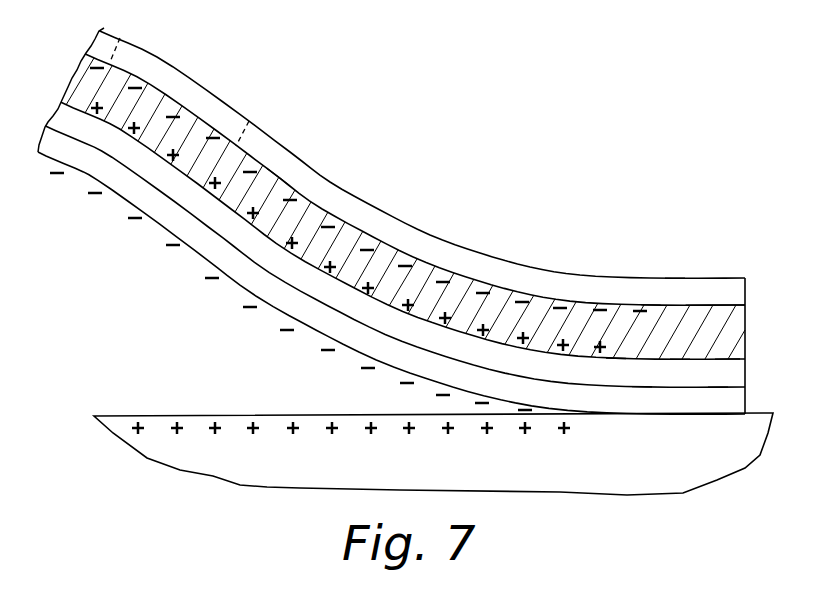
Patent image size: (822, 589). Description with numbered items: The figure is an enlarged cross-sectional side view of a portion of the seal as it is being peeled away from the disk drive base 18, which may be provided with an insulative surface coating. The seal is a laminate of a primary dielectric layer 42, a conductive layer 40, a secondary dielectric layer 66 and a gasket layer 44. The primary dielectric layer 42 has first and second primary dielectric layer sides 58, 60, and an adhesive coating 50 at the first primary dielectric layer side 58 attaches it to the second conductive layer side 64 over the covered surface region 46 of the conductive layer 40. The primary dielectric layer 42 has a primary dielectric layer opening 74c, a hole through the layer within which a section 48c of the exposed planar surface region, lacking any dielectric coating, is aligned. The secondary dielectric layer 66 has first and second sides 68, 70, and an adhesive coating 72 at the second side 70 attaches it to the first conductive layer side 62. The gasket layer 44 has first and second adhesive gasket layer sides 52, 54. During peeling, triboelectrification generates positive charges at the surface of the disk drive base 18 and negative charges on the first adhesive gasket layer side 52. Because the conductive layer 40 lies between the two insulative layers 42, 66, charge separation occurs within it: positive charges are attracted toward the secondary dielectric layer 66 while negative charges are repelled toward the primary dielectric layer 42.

The disk drive base 18 is at (477, 483).
The conductive layer 40 is at (748, 343).
The primary dielectric layer 42 is at (748, 290).
The gasket layer 44 is at (748, 398).
The covered surface region 46 is at (278, 172).
The exposed planar surface region section 48c is at (167, 87).
The adhesive coating 50 is at (651, 303).
The first adhesive gasket layer side 52 is at (690, 413).
The second adhesive gasket layer side 54 is at (718, 388).
The first primary dielectric layer side 58 is at (701, 303).
The second primary dielectric layer side 60 is at (675, 280).
The first conductive layer side 62 is at (726, 356).
The second conductive layer side 64 is at (733, 306).
The secondary dielectric layer 66 is at (748, 370).
The first side of secondary dielectric layer 68 is at (642, 385).
The second side of secondary dielectric layer 70 is at (680, 360).
The adhesive coating 72 is at (616, 360).
The primary dielectric layer opening 74c is at (230, 112).